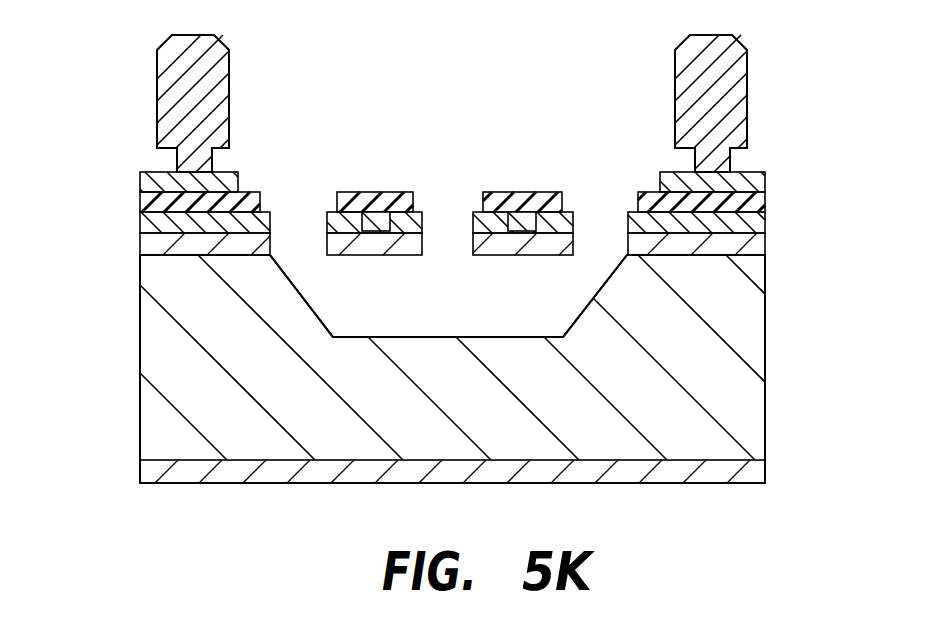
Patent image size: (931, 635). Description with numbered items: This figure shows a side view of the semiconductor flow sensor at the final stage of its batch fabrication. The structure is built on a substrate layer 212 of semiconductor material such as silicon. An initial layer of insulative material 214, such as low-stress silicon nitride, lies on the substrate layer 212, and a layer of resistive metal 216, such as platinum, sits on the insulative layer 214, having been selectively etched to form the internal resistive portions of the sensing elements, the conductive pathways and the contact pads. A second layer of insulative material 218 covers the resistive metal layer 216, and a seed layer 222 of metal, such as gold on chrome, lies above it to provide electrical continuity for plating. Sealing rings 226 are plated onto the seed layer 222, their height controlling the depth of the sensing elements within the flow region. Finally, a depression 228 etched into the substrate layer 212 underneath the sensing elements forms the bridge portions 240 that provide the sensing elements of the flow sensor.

The substrate layer 212 is at (178, 377).
The initial layer of insulative material 214 is at (148, 245).
The layer of resistive metal 216 is at (148, 223).
The second layer of insulative material 218 is at (142, 200).
The seed layer 222 is at (138, 183).
The sealing rings 226 is at (180, 81).
The depression 228 is at (517, 305).
The bridge portions 240 is at (522, 192).